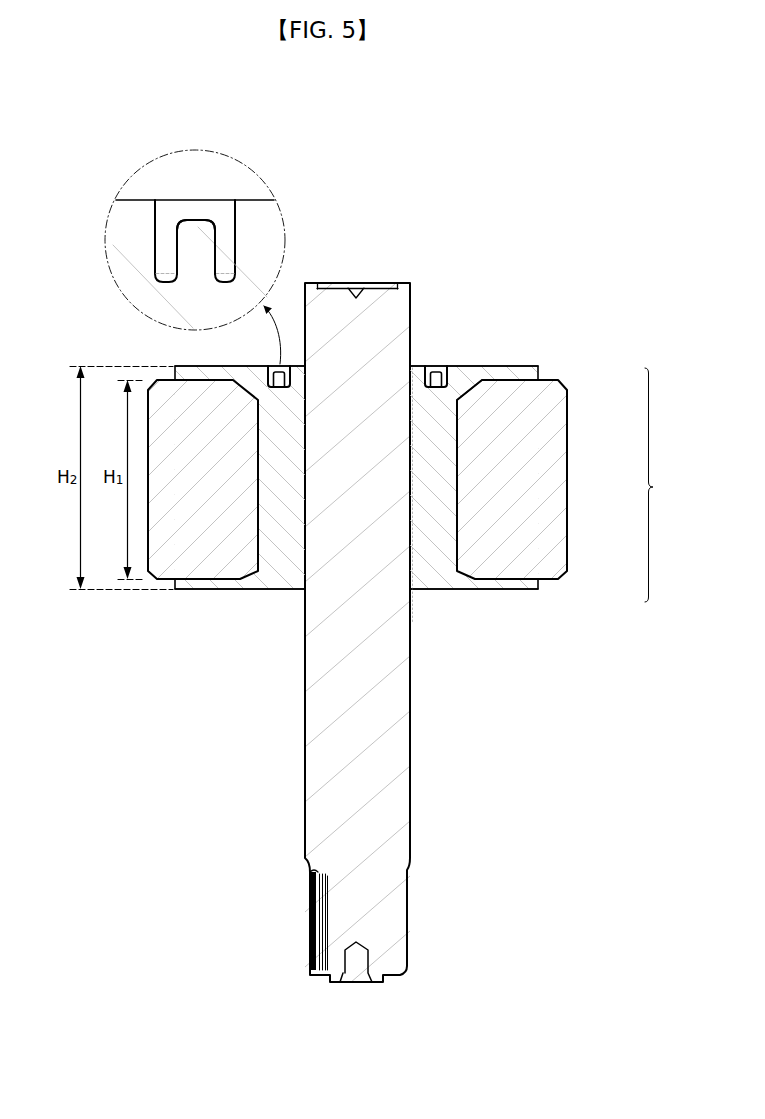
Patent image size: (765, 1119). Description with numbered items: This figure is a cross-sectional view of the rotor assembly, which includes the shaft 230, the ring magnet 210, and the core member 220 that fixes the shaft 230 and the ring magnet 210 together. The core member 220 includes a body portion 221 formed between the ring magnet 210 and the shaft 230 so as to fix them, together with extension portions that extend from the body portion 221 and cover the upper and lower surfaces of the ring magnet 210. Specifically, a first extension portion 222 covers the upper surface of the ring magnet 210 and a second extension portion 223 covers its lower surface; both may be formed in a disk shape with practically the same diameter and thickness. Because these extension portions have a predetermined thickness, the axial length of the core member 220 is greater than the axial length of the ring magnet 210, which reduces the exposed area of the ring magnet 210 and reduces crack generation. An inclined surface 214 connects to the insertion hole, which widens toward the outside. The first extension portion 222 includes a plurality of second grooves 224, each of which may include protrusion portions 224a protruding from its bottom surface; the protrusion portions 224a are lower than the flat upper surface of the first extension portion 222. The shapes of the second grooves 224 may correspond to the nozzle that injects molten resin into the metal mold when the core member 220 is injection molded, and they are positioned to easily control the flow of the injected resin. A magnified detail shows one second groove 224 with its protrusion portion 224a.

The ring magnet 210 is at (206, 566).
The inclined surface 214 is at (465, 385).
The core member 220 is at (667, 485).
The body portion 221 is at (440, 450).
The first extension portion 222 is at (539, 368).
The second extension portion 223 is at (540, 588).
The second grooves 224 is at (166, 236).
The protrusion portions 224a is at (208, 232).
The shaft 230 is at (387, 730).